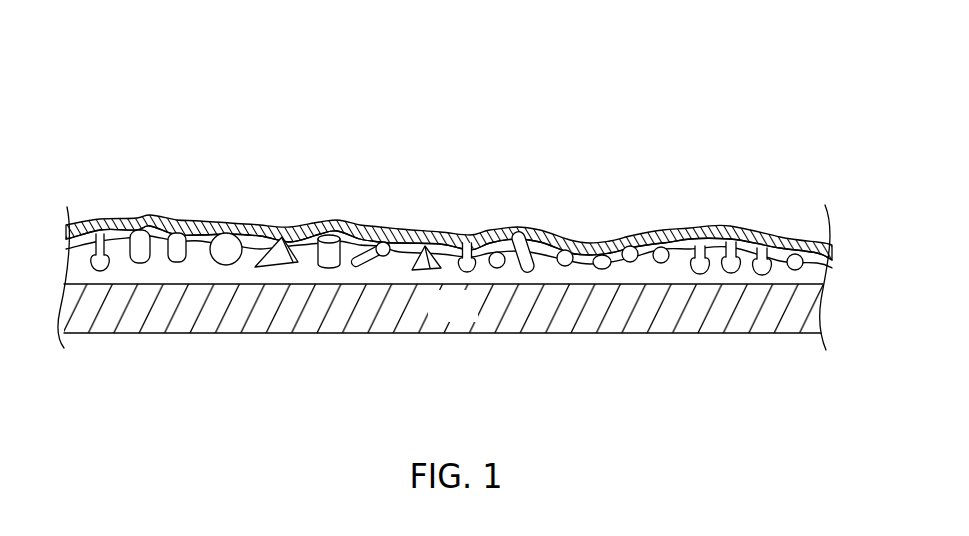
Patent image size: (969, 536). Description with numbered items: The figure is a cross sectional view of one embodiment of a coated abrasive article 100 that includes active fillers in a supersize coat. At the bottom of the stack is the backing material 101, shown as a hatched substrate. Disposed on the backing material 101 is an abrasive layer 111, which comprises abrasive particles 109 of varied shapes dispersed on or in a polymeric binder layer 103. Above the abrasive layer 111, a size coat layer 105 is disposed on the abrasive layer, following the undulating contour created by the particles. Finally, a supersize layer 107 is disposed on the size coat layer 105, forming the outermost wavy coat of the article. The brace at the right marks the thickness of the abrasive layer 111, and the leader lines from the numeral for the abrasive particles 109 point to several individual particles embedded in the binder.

The coated abrasive article 100 is at (469, 183).
The backing material 101 is at (471, 319).
The polymeric binder layer 103 is at (582, 272).
The size coat layer 105 is at (540, 250).
The supersize layer 107 is at (490, 238).
The abrasive particles 109 is at (327, 246).
The abrasive layer 111 is at (473, 201).